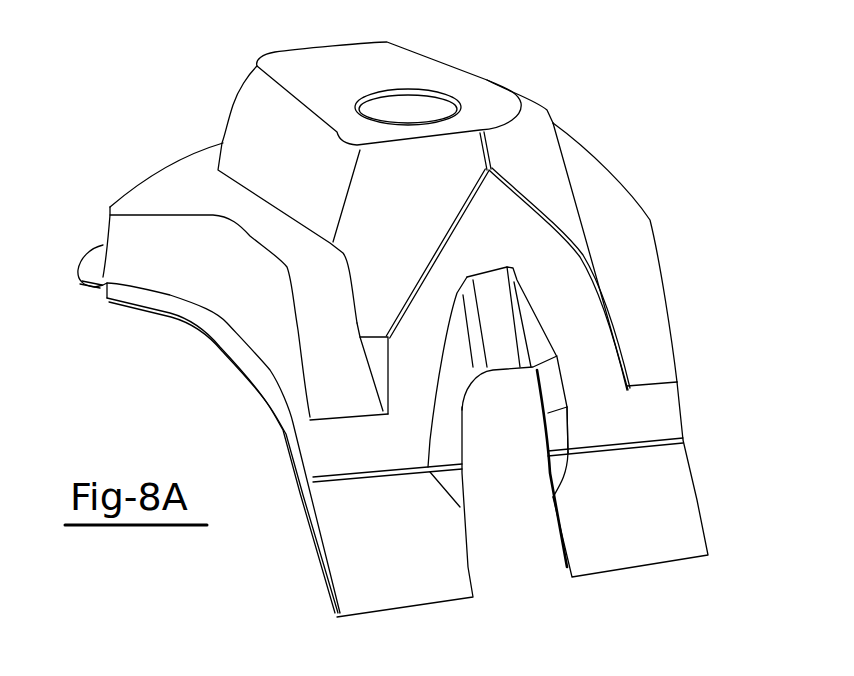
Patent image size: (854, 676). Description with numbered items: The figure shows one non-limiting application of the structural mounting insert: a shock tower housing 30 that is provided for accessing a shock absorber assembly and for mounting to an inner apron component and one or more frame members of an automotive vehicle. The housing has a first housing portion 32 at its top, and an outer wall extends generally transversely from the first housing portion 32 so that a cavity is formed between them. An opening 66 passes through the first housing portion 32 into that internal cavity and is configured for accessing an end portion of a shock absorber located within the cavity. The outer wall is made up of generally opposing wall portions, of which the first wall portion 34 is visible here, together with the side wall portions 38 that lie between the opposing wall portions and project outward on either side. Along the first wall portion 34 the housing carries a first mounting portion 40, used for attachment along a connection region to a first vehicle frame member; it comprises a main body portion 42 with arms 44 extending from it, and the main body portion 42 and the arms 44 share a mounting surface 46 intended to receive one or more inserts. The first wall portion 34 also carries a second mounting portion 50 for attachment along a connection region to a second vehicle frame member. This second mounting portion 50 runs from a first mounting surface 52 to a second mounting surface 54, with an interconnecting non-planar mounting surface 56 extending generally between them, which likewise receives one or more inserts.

The shock tower housing 30 is at (619, 65).
The first housing portion 32 is at (375, 77).
The first wall portion 34 is at (524, 219).
The side wall portions 38 is at (217, 279).
The first mounting portion 40 is at (511, 331).
The main body portion 42 is at (528, 350).
The arms 44 is at (450, 575).
The mounting surface 46 is at (400, 461).
The second mounting portion 50 is at (448, 162).
The first mounting surface 52 is at (417, 213).
The second mounting surface 54 is at (327, 307).
The interconnecting non-planar mounting surface 56 is at (355, 323).
The opening 66 is at (424, 107).